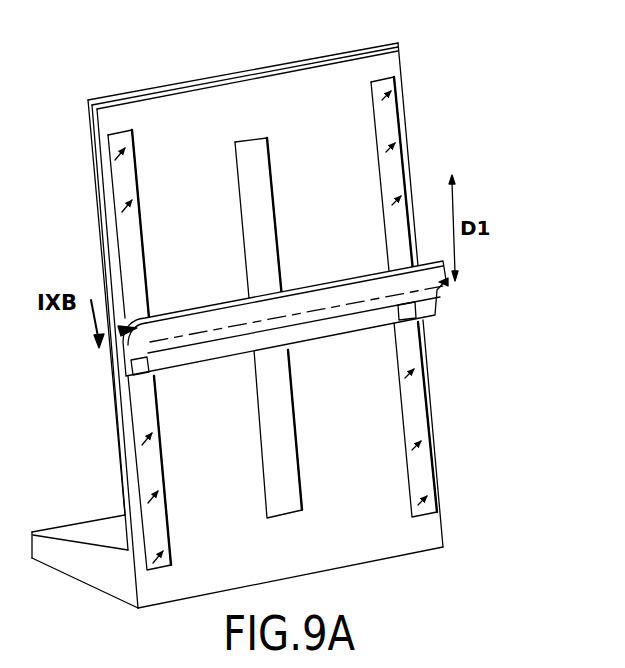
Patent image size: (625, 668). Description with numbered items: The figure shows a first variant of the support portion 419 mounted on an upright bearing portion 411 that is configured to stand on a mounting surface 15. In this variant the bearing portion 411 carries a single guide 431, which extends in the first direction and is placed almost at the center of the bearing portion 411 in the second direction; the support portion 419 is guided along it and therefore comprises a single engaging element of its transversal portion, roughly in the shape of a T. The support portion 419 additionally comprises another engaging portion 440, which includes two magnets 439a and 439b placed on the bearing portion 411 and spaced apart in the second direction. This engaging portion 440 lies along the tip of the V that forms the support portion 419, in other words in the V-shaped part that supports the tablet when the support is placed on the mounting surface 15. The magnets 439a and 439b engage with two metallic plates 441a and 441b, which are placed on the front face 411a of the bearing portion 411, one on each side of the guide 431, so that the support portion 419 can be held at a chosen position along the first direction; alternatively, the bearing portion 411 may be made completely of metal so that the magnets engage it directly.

The bearing portion 411 is at (153, 84).
The front face 411a is at (298, 82).
The mounting surface 15 is at (393, 590).
The metallic plate 441a is at (120, 172).
The metallic plate 441b is at (393, 128).
The guide 431 is at (262, 210).
The support portion 419 is at (334, 314).
The engaging portion 440 is at (201, 354).
The magnet 439a is at (131, 373).
The magnet 439b is at (414, 318).